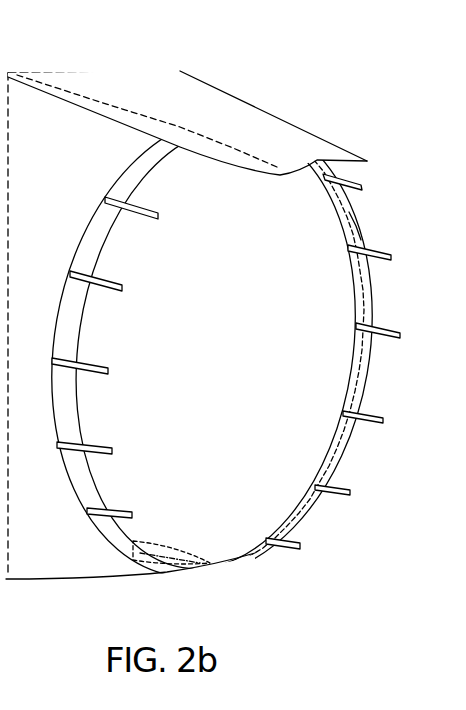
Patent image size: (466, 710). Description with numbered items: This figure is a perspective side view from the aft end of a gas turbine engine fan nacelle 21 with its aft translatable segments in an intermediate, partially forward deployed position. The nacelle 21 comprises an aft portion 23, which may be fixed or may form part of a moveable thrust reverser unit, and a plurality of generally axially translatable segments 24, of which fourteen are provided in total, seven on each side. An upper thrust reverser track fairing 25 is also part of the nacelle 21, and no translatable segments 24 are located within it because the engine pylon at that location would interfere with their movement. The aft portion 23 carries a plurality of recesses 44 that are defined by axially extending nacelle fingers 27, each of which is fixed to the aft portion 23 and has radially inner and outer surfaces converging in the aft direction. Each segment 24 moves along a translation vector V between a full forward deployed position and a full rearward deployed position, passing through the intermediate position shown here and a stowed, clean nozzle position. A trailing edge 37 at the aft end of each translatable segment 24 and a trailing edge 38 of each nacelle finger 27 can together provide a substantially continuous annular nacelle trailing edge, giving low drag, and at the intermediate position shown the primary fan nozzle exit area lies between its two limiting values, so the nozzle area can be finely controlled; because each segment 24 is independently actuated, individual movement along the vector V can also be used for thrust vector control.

The fan nacelle 21 is at (338, 95).
The aft portion 23 is at (50, 115).
The aft translatable segment 24 is at (217, 346).
The upper thrust reverser track fairing 25 is at (220, 104).
The nacelle finger 27 is at (376, 259).
The trailing edge of aft translatable segment 37 is at (366, 380).
The trailing edge of nacelle finger 38 is at (399, 337).
The recess 44 is at (366, 224).
The translation vector V is at (280, 441).